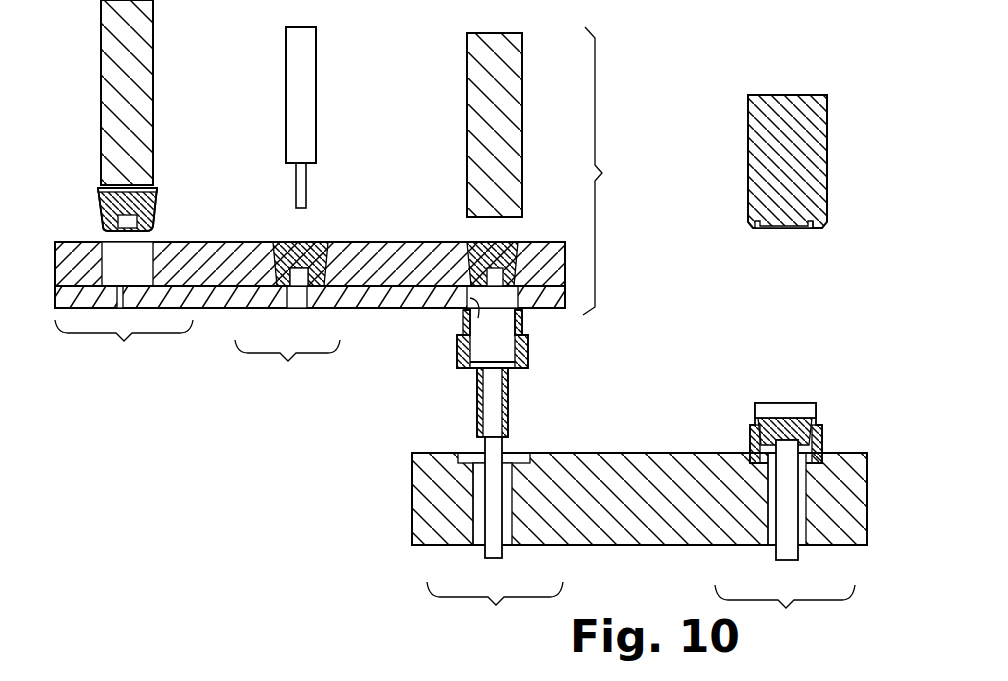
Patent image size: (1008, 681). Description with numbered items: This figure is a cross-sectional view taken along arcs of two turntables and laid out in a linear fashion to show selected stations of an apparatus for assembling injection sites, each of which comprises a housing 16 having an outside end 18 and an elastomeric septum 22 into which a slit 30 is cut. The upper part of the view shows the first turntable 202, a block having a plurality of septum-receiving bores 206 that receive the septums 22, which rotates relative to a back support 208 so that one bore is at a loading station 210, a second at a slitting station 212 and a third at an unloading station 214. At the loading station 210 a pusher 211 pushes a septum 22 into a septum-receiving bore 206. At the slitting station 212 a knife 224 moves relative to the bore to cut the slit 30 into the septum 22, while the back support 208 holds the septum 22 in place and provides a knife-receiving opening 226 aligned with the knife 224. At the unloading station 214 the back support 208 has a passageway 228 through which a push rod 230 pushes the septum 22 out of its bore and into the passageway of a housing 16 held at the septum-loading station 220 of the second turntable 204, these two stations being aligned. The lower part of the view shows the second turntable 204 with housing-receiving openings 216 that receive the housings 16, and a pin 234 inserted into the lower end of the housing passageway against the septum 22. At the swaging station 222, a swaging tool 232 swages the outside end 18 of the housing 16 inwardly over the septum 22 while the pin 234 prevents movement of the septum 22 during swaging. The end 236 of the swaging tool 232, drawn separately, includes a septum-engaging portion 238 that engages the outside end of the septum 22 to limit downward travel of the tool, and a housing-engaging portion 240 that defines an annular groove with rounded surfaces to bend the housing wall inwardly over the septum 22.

The housing 16 is at (478, 405).
The outside end of the housing 18 is at (520, 308).
The septum 22 is at (98, 200).
The slit 30 is at (155, 205).
The first turntable 202 is at (243, 242).
The second turntable 204 is at (412, 475).
The septum-receiving bore 206 is at (490, 242).
The back support 208 is at (223, 297).
The loading station 210 is at (124, 344).
The pusher 211 is at (130, 78).
The slitting station 212 is at (287, 359).
The unloading station 214 is at (618, 171).
The housing-receiving opening 216 is at (477, 523).
The septum-loading station 220 is at (495, 607).
The swaging station 222 is at (785, 611).
The knife 224 is at (305, 78).
The knife-receiving opening 226 is at (295, 297).
The passageway 228 is at (465, 318).
The push rod 230 is at (480, 132).
The swaging tool 232 is at (746, 135).
The pin 234 is at (497, 447).
The end of the swaging tool 236 is at (748, 228).
The septum-engaging portion 238 is at (786, 229).
The housing-engaging portion 240 is at (812, 229).